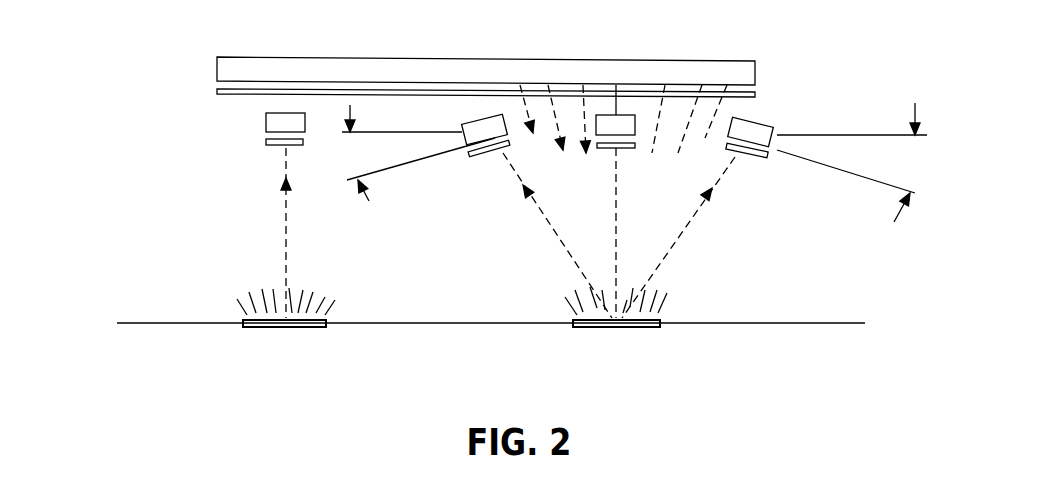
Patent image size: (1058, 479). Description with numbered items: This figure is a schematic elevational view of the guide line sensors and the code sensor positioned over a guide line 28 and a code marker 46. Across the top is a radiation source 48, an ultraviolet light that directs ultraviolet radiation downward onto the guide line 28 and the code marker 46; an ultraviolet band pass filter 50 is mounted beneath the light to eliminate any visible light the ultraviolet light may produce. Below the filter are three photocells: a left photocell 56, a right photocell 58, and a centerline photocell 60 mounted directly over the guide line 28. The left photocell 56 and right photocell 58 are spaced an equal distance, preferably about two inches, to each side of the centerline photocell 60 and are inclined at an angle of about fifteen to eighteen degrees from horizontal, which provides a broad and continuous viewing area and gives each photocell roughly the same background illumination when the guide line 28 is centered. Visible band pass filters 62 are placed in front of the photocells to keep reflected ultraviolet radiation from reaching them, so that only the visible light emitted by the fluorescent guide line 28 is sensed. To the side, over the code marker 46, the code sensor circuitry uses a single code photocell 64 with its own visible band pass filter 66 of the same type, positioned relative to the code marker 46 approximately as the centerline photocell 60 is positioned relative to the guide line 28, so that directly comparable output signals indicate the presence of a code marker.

The guide line 28 is at (632, 327).
The code marker 46 is at (265, 327).
The radiation source 48 is at (283, 63).
The ultraviolet band pass filter 50 is at (227, 95).
The left photocell 56 is at (480, 123).
The right photocell 58 is at (762, 128).
The centerline photocell 60 is at (633, 122).
The visible band pass filter 62 is at (477, 157).
The code photocell 64 is at (265, 123).
The visible band pass filter 66 is at (278, 147).